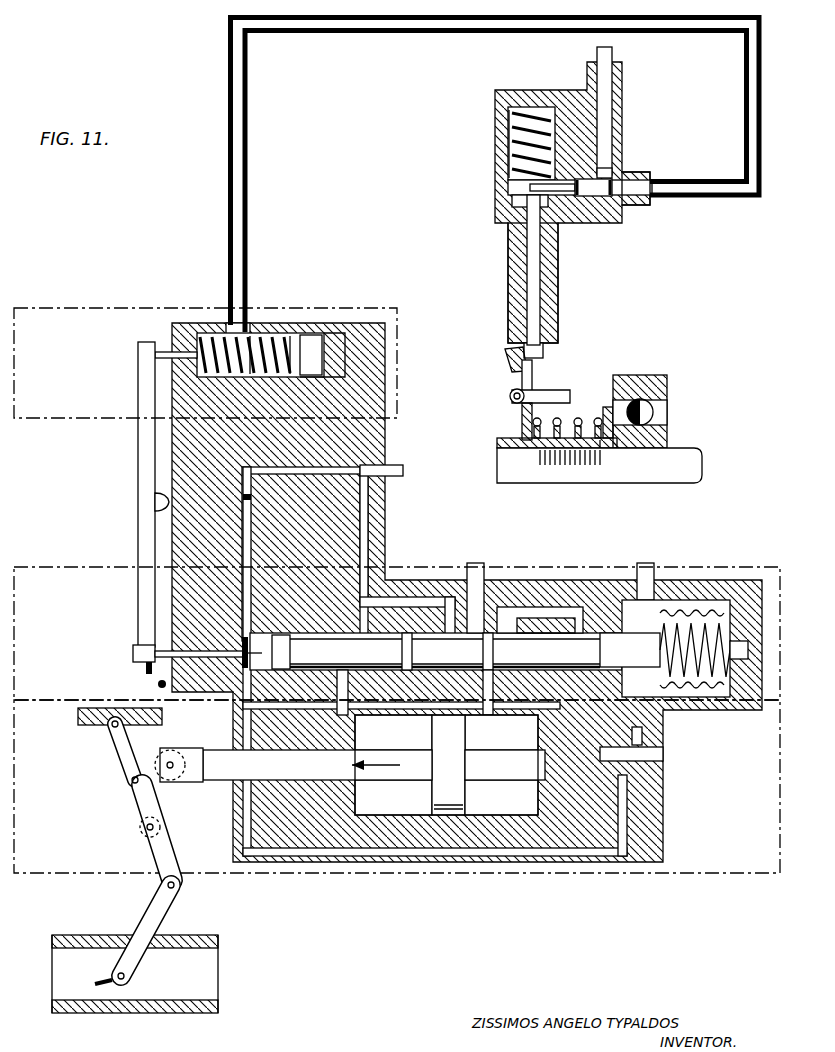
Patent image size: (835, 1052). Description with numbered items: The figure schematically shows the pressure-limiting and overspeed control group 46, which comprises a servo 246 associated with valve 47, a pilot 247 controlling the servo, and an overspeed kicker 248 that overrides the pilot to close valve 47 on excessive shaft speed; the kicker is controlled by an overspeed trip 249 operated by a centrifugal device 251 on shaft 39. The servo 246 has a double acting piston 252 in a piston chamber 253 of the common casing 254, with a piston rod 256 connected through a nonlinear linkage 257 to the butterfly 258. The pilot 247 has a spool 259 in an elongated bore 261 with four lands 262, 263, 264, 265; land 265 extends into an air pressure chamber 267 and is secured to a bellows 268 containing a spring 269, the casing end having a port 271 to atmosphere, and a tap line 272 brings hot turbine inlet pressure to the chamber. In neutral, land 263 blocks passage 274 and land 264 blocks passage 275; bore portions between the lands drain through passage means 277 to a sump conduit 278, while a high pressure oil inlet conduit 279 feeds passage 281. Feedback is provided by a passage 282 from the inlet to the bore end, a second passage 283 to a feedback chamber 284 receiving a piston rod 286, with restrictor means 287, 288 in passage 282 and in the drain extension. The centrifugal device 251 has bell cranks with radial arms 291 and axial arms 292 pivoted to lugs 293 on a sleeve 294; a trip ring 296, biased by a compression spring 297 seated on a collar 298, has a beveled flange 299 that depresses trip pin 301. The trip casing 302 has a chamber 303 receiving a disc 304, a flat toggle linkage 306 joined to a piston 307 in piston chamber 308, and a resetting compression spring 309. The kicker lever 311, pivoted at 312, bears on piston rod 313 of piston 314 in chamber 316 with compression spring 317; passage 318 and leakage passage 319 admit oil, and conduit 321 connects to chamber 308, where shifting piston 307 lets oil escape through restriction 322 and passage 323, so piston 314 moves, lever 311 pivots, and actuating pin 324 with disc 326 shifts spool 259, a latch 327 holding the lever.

The shaft 39 is at (704, 455).
The pressure-limiting and overspeed control group 46 is at (212, 273).
The valve 47 is at (172, 1022).
The servo 246 is at (737, 873).
The pilot 247 is at (68, 567).
The overspeed kicker 248 is at (86, 308).
The overspeed trip 249 is at (492, 175).
The centrifugal device 251 is at (612, 375).
The double acting piston 252 is at (437, 797).
The piston chamber 253 is at (512, 815).
The common casing 254 is at (362, 330).
The piston rod 256 is at (222, 770).
The linkage 257 is at (155, 852).
The butterfly 258 is at (145, 968).
The spool 259 is at (313, 640).
The elongated bore 261 is at (306, 690).
The land 262 is at (200, 640).
The land 263 is at (402, 650).
The land 264 is at (495, 652).
The land 265 is at (632, 635).
The air pressure chamber 267 is at (688, 695).
The bellows 268 is at (707, 612).
The spring 269 is at (724, 682).
The port 271 is at (747, 662).
The tap line 272 is at (654, 580).
The passage 274 is at (357, 733).
The passage 275 is at (513, 690).
The passage means 277 is at (498, 610).
The conduit 278 is at (484, 570).
The high pressure oil inlet conduit 279 is at (392, 466).
The passage 281 is at (363, 530).
The passage 282 is at (243, 548).
The second passage 283 is at (375, 850).
The feedback chamber 284 is at (650, 760).
The piston rod 286 is at (495, 768).
The restrictor means 287 is at (243, 496).
The restrictor means 288 is at (643, 742).
The radial arm 291 is at (522, 425).
The axial arm 292 is at (555, 390).
The lugs 293 is at (511, 400).
The sleeve 294 is at (522, 449).
The trip ring 296 is at (545, 410).
The compression spring 297 is at (579, 420).
The collar 298 is at (607, 447).
The beveled flange 299 is at (512, 362).
The trip pin 301 is at (542, 307).
The casing 302 is at (560, 277).
The chamber 303 is at (510, 125).
The disc 304 is at (512, 203).
The flat toggle linkage 306 is at (585, 196).
The piston 307 is at (612, 196).
The piston chamber 308 is at (630, 203).
The compression spring 309 is at (508, 148).
The lever 311 is at (140, 452).
The pivot 312 is at (162, 502).
The piston rod 313 is at (185, 352).
The piston 314 is at (311, 333).
The chamber 316 is at (291, 335).
The compression spring 317 is at (252, 332).
The passage 318 is at (345, 362).
The small diameter groove or passage 319 is at (325, 378).
The conduit 321 is at (240, 130).
The restriction 322 is at (606, 172).
The passage 323 is at (604, 100).
The actuating pin 324 is at (200, 648).
The disc 326 is at (213, 696).
The latch 327 is at (146, 683).